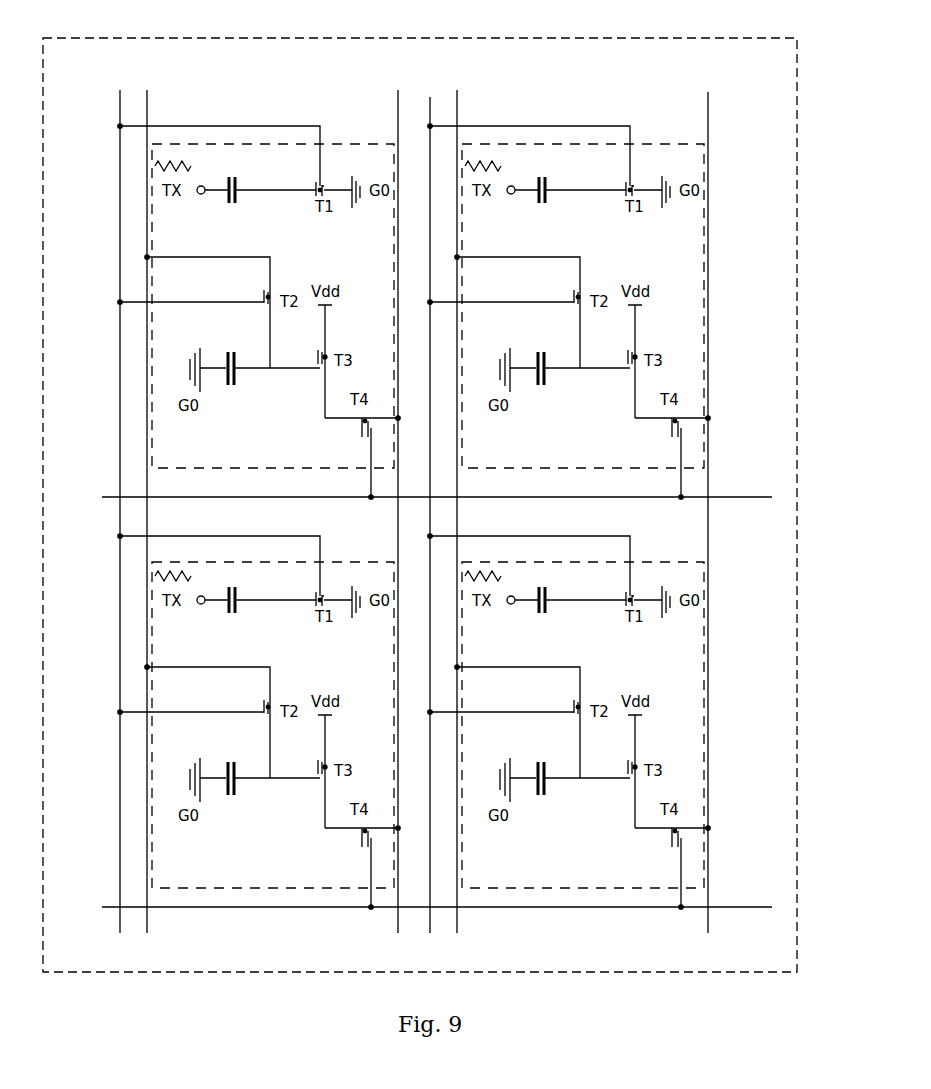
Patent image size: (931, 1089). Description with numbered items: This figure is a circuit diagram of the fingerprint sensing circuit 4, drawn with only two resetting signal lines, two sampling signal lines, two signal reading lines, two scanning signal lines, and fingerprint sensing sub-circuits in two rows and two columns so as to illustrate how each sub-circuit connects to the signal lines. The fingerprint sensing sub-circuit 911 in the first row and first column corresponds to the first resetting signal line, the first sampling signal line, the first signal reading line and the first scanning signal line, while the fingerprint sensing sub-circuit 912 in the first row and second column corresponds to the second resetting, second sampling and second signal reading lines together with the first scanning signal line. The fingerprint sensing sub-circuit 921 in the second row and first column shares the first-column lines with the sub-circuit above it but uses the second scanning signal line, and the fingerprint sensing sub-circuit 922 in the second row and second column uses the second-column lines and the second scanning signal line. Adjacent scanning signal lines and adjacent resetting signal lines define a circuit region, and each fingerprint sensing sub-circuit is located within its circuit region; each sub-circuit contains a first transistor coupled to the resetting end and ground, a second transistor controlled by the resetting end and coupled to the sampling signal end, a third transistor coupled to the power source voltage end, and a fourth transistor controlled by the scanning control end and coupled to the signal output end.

The fingerprint sensing circuit 4 is at (797, 341).
The fingerprint sensing sub-circuit in a first row and a first column 911 is at (333, 142).
The fingerprint sensing sub-circuit in the first row and a second column 912 is at (646, 142).
The fingerprint sensing sub-circuit in a second row and the first column 921 is at (345, 562).
The fingerprint sensing sub-circuit in the second row and second column 922 is at (650, 562).